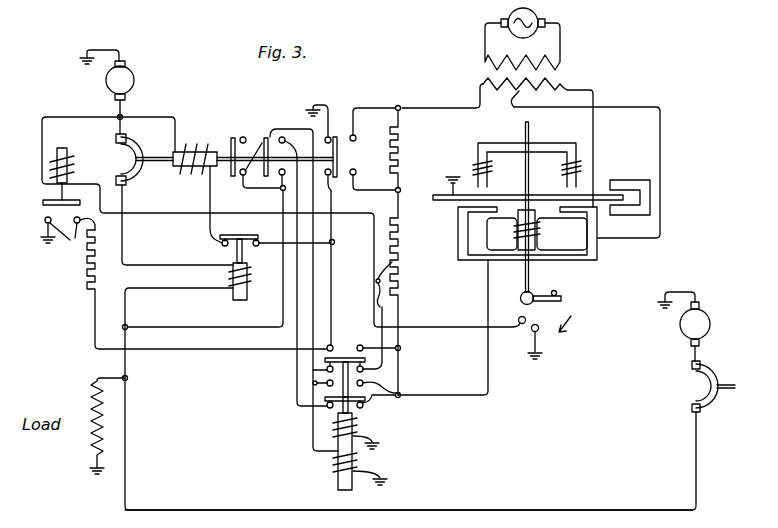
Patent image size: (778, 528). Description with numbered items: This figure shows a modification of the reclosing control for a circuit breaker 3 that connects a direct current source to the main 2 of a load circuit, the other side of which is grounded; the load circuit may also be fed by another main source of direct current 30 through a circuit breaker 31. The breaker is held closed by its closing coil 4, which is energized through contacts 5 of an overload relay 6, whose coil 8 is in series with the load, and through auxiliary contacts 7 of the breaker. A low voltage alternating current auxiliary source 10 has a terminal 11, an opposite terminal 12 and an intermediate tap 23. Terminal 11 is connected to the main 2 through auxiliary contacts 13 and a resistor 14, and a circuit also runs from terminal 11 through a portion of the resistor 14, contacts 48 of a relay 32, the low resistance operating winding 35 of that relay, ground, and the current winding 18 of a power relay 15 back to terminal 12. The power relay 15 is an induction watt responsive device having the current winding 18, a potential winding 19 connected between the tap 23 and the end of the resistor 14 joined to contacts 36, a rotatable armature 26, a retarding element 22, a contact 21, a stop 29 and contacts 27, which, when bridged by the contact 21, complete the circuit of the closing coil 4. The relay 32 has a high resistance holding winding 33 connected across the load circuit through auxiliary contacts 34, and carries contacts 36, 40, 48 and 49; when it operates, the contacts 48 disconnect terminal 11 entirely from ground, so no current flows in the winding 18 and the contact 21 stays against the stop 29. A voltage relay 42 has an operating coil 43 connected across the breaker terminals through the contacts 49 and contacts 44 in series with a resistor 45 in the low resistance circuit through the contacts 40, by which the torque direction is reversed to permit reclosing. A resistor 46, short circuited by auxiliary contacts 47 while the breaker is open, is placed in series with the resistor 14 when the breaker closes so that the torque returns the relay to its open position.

The main 2 is at (436, 508).
The circuit breaker 3 is at (140, 156).
The closing coil 4 is at (203, 142).
The contacts 5 is at (222, 244).
The overload relay 6 is at (409, 347).
The auxiliary contacts 7 is at (328, 175).
The coil 8 is at (252, 271).
The auxiliary source of current 10 is at (540, 39).
The terminal 11 is at (480, 95).
The terminal 12 is at (564, 94).
The auxiliary contacts 13 is at (246, 138).
The resistor 14 is at (401, 262).
The power relay 15 is at (517, 232).
The current winding 18 is at (562, 172).
The potential winding 19 is at (541, 230).
The contact 21 is at (562, 299).
The retarding element 22 is at (651, 197).
The tap 23 is at (578, 164).
The rotatable armature 26 is at (440, 196).
The contacts 27 is at (527, 331).
The stop 29 is at (557, 291).
The main source of direct current 30 is at (706, 327).
The circuit breaker 31 is at (698, 386).
The relay 32 is at (351, 453).
The holding winding 33 is at (357, 421).
The auxiliary contacts 34 is at (280, 175).
The operating winding 35 is at (333, 463).
The contacts 36 is at (312, 414).
The contacts 40 is at (358, 344).
The voltage relay 42 is at (44, 188).
The operating coil 43 is at (69, 164).
The contacts 44 is at (68, 237).
The resistor 45 is at (86, 288).
The resistor 46 is at (401, 140).
The auxiliary contacts 47 is at (356, 143).
The contacts 48 is at (327, 369).
The contacts 49 is at (394, 380).